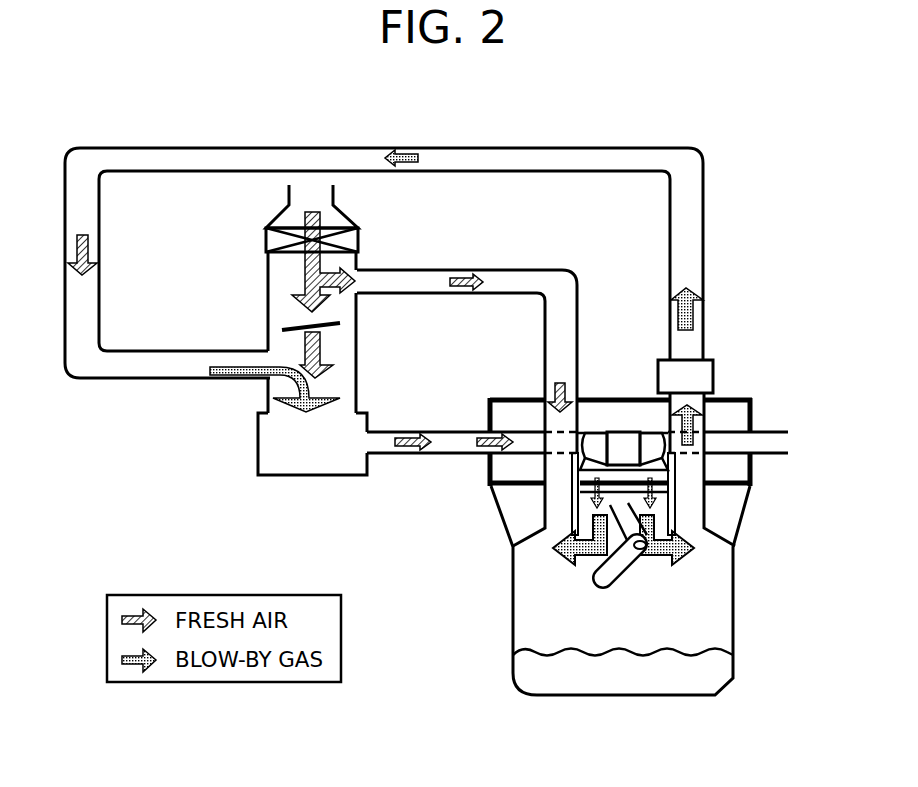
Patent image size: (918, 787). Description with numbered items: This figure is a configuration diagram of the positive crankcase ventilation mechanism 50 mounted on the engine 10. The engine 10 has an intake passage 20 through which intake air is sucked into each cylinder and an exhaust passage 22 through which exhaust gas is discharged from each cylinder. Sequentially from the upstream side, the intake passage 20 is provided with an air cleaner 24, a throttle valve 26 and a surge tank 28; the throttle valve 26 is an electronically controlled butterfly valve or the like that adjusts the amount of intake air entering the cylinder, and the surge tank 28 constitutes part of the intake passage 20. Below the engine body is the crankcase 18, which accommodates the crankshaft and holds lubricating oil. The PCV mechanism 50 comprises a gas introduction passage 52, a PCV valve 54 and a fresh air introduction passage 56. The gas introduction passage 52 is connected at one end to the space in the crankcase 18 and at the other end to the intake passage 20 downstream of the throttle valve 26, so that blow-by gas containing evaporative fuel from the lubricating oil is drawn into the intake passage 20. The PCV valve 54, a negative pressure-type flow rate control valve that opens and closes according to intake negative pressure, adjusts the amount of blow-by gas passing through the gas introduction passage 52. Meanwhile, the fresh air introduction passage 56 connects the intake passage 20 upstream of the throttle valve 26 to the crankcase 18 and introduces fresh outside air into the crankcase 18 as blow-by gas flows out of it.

The engine 10 is at (502, 590).
The crankcase 18 is at (520, 625).
The intake passage 20 is at (440, 455).
The exhaust passage 22 is at (778, 430).
The air cleaner 24 is at (265, 242).
The throttle valve 26 is at (295, 330).
The surge tank 28 is at (307, 475).
The PCV mechanism 50 is at (576, 260).
The gas introduction passage 52 is at (472, 148).
The PCV valve 54 is at (710, 360).
The fresh air introduction passage 56 is at (507, 270).